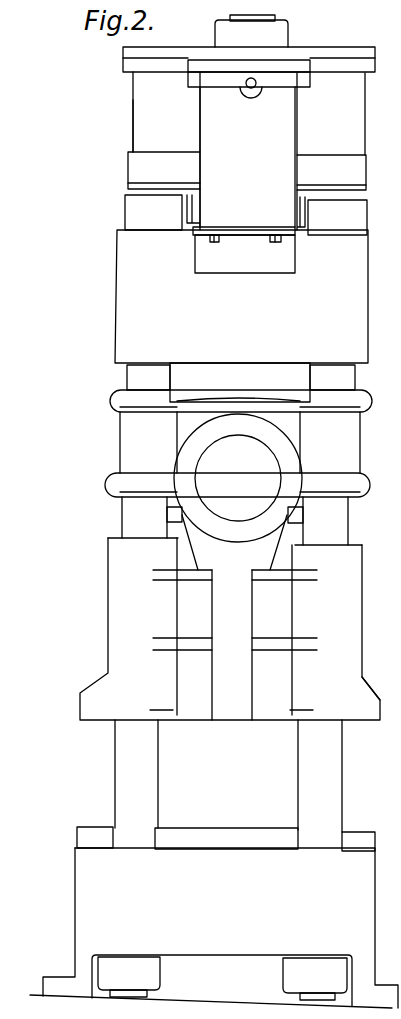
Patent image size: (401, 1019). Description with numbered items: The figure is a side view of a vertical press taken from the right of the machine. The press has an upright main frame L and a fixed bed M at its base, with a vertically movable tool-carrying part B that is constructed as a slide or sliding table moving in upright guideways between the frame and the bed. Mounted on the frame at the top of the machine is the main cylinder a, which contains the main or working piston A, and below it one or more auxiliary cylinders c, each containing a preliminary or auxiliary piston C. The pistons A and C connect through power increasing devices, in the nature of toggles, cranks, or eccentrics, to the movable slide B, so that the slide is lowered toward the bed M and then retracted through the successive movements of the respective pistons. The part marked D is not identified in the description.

The main piston A is at (245, 208).
The main cylinder a is at (132, 125).
The cylinder head block D is at (249, 166).
The main frame L is at (225, 434).
The auxiliary piston C is at (238, 478).
The tool-carrying part B is at (230, 608).
The auxiliary cylinder c is at (361, 684).
The fixed bed M is at (214, 864).